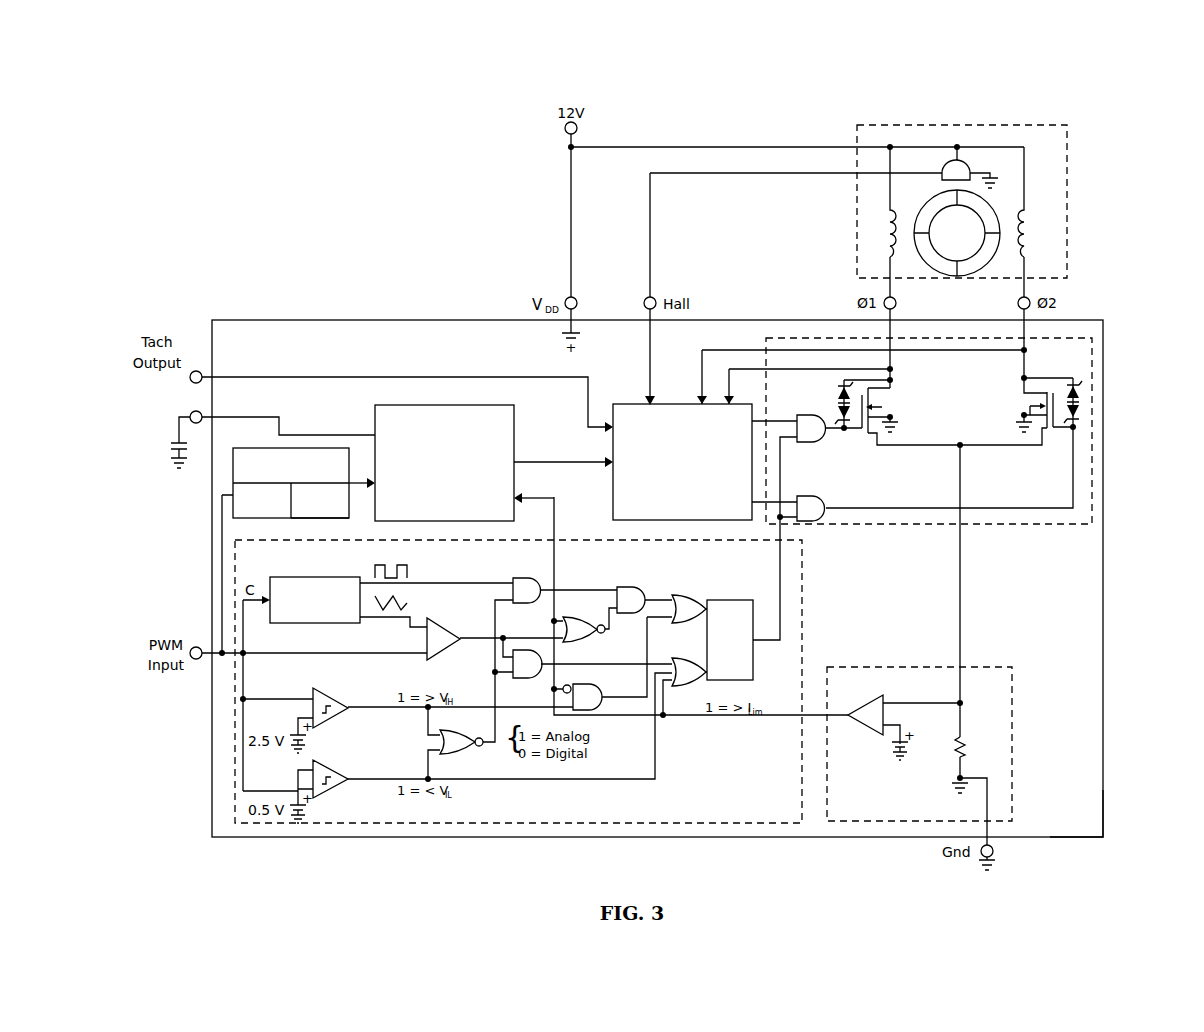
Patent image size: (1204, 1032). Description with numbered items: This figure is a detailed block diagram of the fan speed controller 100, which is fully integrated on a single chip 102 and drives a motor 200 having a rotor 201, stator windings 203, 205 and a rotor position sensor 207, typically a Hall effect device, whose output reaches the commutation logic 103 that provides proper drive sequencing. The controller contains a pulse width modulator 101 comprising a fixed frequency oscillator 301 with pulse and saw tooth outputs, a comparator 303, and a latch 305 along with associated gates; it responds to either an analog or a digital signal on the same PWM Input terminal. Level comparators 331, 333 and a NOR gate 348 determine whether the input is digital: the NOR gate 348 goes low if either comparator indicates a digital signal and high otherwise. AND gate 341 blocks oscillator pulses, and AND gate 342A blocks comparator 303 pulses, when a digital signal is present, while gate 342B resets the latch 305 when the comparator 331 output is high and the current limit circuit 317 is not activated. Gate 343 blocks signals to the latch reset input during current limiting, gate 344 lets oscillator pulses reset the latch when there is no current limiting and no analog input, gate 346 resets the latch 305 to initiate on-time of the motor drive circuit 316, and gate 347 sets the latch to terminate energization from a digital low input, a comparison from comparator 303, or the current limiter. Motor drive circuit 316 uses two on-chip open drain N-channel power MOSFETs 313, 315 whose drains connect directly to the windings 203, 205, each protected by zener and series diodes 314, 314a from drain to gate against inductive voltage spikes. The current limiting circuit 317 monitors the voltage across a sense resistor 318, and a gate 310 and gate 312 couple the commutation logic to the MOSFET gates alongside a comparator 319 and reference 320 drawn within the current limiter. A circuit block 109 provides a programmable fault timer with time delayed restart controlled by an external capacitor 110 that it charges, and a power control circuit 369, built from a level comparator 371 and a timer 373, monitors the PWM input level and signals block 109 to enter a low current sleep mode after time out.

The controller 100 is at (1117, 641).
The pulse width modulator 101 is at (642, 811).
The single chip 102 is at (1083, 822).
The commutation logic 103 is at (638, 420).
The fault timer circuit block 109 is at (395, 445).
The external capacitor 110 is at (173, 448).
The motor 200 is at (999, 201).
The rotor 201 is at (973, 222).
The stator winding 203 is at (1020, 245).
The stator winding 205 is at (892, 232).
The rotor position sensor 207 is at (945, 165).
The oscillator 301 is at (312, 589).
The comparator 303 is at (433, 647).
The latch 305 is at (750, 620).
The AND gate 310 is at (801, 432).
The AND gate 312 is at (803, 504).
The power MOSFET 313 is at (1065, 380).
The zener and series diodes 314 is at (1078, 407).
The zener and series diodes 314a is at (838, 408).
The power MOSFET 315 is at (876, 409).
The motor drive circuit 316 is at (1092, 523).
The current limiting circuit 317 is at (987, 678).
The sense resistor 318 is at (965, 738).
The current limit comparator 319 is at (880, 695).
The reference voltage 320 is at (895, 750).
The level comparator 331 is at (313, 692).
The level comparator 333 is at (341, 786).
The AND gate 341 is at (515, 582).
The AND gate 342A is at (515, 668).
The gate 342B is at (593, 693).
The gate 343 is at (582, 632).
The gate 344 is at (627, 600).
The gate 346 is at (690, 593).
The gate 347 is at (687, 668).
The NOR gate 348 is at (453, 742).
The power control circuit 369 is at (240, 468).
The level comparator 371 is at (257, 507).
The timer 373 is at (313, 507).